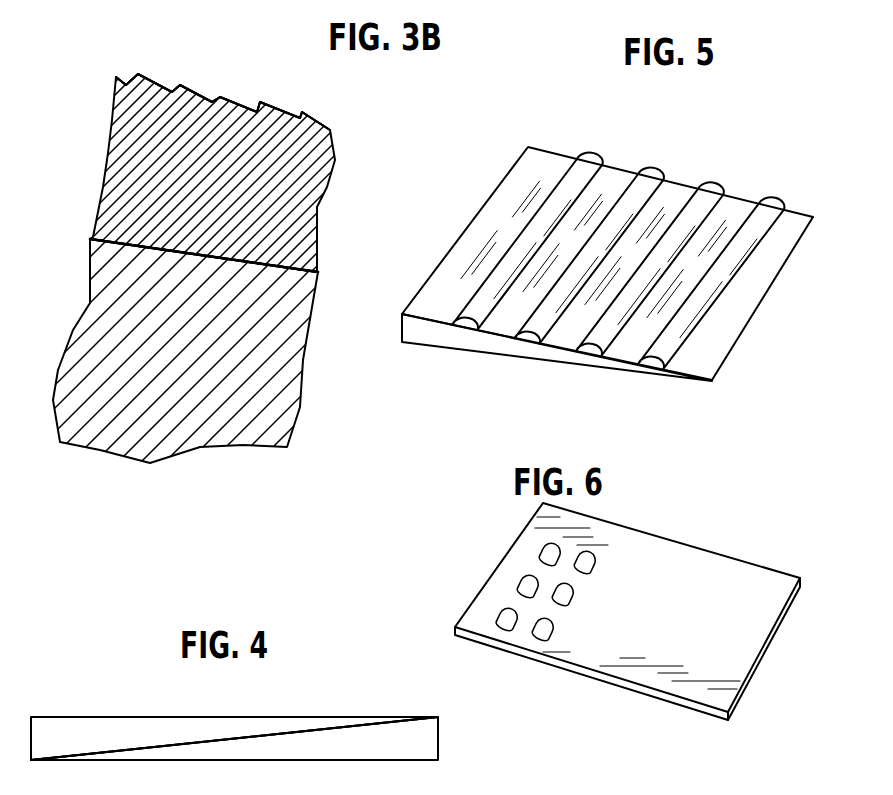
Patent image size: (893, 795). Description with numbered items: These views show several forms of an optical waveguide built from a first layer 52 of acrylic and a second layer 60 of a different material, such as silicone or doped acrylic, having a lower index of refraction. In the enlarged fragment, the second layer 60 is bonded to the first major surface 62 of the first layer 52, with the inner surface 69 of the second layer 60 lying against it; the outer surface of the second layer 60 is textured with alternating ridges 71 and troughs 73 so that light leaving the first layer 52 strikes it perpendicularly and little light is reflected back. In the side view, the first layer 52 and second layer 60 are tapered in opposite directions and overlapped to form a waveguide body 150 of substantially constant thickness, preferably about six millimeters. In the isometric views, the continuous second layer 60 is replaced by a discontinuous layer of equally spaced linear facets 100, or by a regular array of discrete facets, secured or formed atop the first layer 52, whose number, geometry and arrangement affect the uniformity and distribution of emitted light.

In FIG. 3B, the first layer 52 is at (275, 391).
In FIG. 5, the first layer 52 is at (452, 273).
In FIG. 6, the first layer 52 is at (666, 597).
In FIG. 4, the first layer 52 is at (438, 760).
In FIG. 3B, the second layer 60 is at (273, 184).
In FIG. 4, the second layer 60 is at (98, 723).
In FIG. 3B, the first major surface 62 is at (124, 242).
In FIG. 6, the first major surface 62 is at (525, 588).
In FIG. 3B, the inner surface 69 is at (318, 288).
In FIG. 3B, the ridges 71 is at (175, 88).
In FIG. 3B, the troughs 73 is at (172, 92).
In FIG. 5, the linear facets 100 is at (572, 196).
In FIG. 4, the waveguide body 150 is at (438, 717).